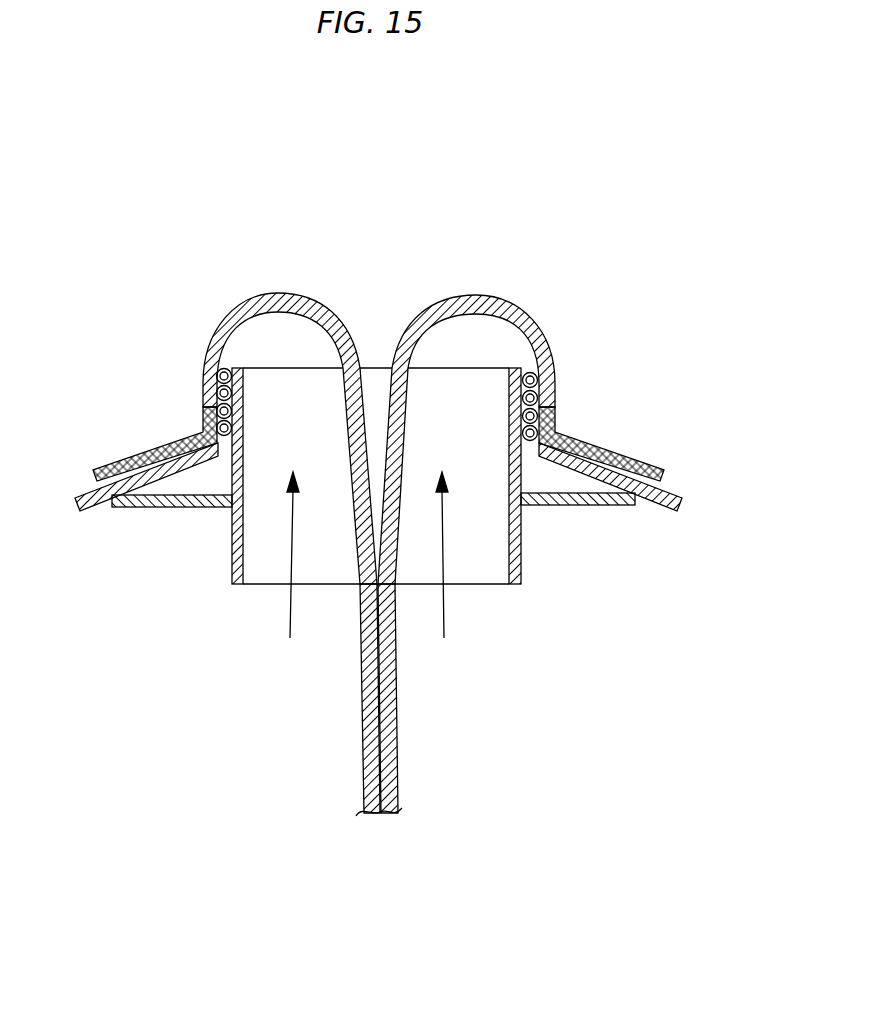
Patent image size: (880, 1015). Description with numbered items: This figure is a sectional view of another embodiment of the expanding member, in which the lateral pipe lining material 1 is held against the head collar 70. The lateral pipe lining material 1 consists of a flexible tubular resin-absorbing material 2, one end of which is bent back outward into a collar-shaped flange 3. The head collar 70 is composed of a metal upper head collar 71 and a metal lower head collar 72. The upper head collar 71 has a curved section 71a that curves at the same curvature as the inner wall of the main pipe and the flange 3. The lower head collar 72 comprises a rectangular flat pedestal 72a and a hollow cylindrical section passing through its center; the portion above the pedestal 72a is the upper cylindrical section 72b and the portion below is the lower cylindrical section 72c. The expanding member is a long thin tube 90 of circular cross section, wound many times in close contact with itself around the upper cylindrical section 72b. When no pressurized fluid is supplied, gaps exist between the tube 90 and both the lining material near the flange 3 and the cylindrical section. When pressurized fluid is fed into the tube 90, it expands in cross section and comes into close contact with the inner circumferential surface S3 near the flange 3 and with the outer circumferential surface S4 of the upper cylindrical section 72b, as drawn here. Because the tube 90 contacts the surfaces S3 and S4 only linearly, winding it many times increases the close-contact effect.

The lateral pipe lining material 1 is at (372, 266).
The tubular resin-absorbing material 2 is at (398, 676).
The flange 3 is at (611, 447).
The head collar 70 is at (394, 442).
The upper head collar 71 is at (394, 461).
The curved section 71a is at (80, 494).
The lower head collar 72 is at (406, 442).
The pedestal 72a is at (573, 507).
The upper cylindrical section 72b is at (517, 368).
The lower cylindrical section 72c is at (232, 572).
The tube 90 is at (541, 377).
The inner circumferential surface near the flange S3 is at (541, 386).
The outer circumferential surface of the cylindrical section S4 is at (509, 442).